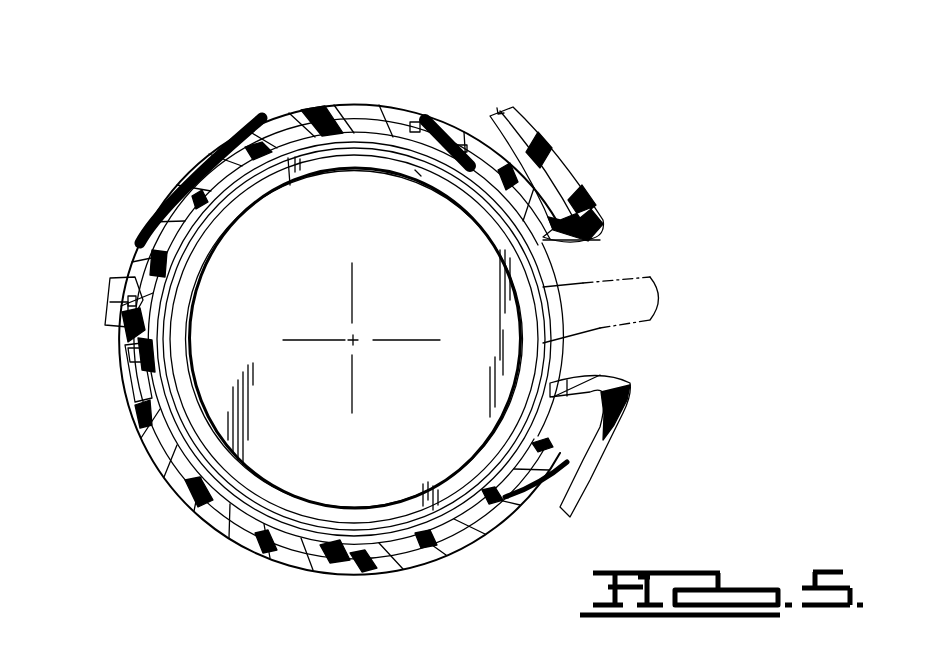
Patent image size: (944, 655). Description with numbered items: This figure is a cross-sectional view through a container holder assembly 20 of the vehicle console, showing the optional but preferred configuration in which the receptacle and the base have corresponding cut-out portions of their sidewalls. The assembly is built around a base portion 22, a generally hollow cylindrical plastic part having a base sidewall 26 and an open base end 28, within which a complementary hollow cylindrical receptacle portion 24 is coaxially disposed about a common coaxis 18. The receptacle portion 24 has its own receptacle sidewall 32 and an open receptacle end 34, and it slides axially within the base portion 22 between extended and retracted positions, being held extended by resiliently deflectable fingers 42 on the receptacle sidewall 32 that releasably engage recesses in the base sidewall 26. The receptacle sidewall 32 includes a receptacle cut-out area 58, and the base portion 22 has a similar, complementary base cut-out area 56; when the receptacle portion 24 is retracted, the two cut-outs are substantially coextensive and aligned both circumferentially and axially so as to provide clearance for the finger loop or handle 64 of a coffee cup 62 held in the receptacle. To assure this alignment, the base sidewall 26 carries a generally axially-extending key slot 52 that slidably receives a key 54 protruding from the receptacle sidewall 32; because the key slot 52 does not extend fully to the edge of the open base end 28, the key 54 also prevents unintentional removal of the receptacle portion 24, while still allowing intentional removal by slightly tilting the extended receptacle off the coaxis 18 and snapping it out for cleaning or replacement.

The coaxis 18 is at (357, 343).
The container holder assembly 20 is at (558, 72).
The base portion 22 is at (522, 192).
The receptacle portion 24 is at (533, 455).
The base sidewall 26 is at (409, 556).
The open base end 28 is at (297, 543).
The receptacle sidewall 32 is at (252, 500).
The open receptacle end 34 is at (165, 443).
The resiliently deflectable fingers 42 is at (417, 130).
The key slot 52 is at (130, 301).
The key 54 is at (135, 302).
The base cut-out area 56 is at (600, 240).
The receptacle cut-out area 58 is at (543, 242).
The coffee cup 62 is at (418, 173).
The finger loop or handle 64 is at (665, 298).